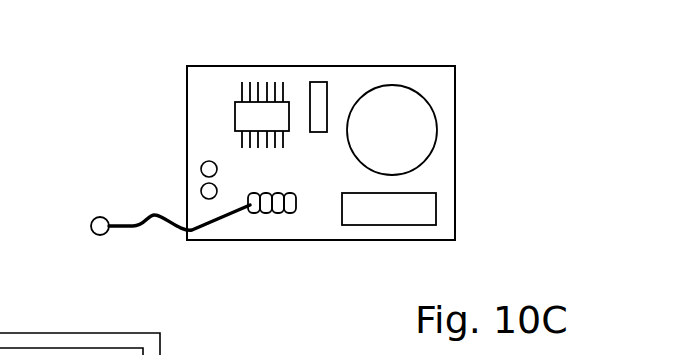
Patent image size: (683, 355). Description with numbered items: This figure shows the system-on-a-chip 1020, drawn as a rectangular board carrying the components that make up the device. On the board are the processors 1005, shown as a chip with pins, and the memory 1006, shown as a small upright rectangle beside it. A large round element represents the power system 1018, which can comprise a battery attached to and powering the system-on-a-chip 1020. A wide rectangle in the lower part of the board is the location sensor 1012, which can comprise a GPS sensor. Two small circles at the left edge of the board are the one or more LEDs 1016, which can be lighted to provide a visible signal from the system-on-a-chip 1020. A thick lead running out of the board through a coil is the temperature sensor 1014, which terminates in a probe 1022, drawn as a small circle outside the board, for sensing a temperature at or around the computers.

The system-on-a-chip 1020 is at (183, 61).
The processors 1005 is at (235, 115).
The memory 1006 is at (317, 82).
The power system 1018 is at (437, 130).
The location sensor 1012 is at (436, 207).
The one or more LEDs 1016 is at (201, 191).
The temperature sensor 1014 is at (133, 230).
The probe 1022 is at (97, 218).